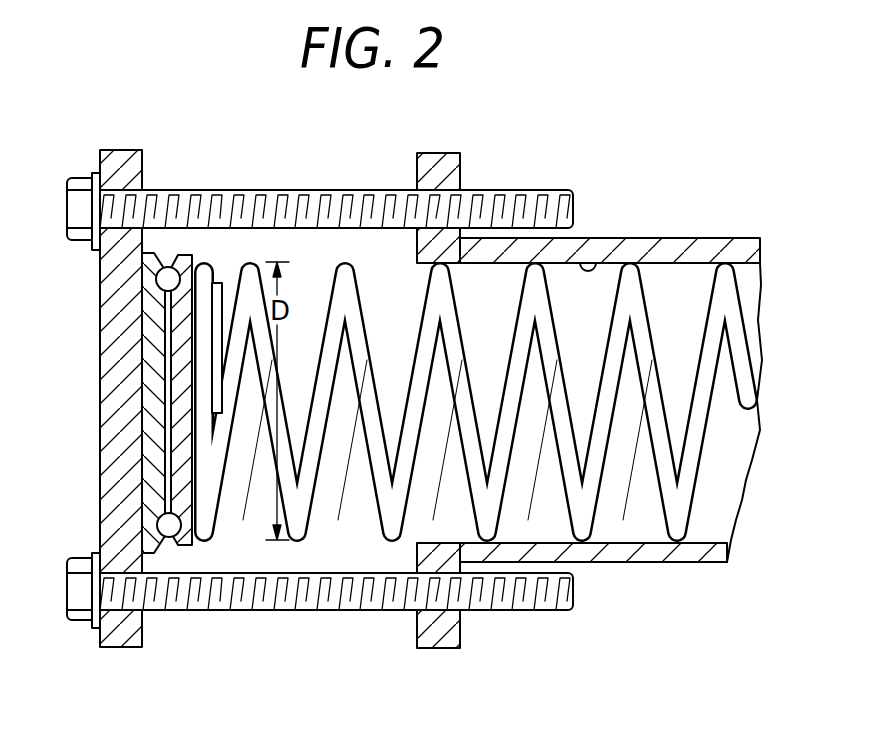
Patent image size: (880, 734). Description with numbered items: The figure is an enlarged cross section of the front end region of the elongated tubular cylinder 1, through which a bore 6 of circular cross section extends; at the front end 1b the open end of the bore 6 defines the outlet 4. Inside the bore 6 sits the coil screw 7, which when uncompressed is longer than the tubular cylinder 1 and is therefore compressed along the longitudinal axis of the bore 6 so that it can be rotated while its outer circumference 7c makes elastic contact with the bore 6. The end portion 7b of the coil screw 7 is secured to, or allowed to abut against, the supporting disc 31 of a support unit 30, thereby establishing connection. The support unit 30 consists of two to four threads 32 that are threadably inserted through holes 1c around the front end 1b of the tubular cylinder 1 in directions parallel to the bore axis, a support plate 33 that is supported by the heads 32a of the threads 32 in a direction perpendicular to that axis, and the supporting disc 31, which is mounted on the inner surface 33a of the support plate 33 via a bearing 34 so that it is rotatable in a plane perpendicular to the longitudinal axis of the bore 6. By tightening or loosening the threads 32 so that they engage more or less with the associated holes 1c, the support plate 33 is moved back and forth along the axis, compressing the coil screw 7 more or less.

The tubular cylinder 1 is at (677, 243).
The front end 1b is at (487, 552).
The holes 1c is at (442, 192).
The outlet 4 is at (368, 613).
The bore 6 is at (600, 262).
The coil screw 7 is at (587, 508).
The end portion of the coil screw 7b is at (205, 275).
The outer circumference of the coil screw 7c is at (343, 262).
The support unit 30 is at (305, 399).
The supporting disc 31 is at (183, 455).
The threads 32 is at (273, 200).
The heads of the threads 32a is at (83, 220).
The support plate 33 is at (123, 450).
The inner surface of the support plate 33a is at (150, 560).
The bearing 34 is at (176, 268).